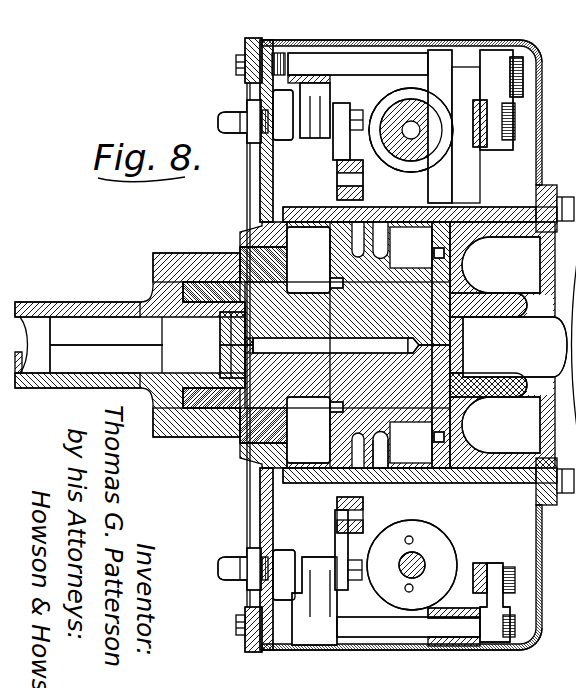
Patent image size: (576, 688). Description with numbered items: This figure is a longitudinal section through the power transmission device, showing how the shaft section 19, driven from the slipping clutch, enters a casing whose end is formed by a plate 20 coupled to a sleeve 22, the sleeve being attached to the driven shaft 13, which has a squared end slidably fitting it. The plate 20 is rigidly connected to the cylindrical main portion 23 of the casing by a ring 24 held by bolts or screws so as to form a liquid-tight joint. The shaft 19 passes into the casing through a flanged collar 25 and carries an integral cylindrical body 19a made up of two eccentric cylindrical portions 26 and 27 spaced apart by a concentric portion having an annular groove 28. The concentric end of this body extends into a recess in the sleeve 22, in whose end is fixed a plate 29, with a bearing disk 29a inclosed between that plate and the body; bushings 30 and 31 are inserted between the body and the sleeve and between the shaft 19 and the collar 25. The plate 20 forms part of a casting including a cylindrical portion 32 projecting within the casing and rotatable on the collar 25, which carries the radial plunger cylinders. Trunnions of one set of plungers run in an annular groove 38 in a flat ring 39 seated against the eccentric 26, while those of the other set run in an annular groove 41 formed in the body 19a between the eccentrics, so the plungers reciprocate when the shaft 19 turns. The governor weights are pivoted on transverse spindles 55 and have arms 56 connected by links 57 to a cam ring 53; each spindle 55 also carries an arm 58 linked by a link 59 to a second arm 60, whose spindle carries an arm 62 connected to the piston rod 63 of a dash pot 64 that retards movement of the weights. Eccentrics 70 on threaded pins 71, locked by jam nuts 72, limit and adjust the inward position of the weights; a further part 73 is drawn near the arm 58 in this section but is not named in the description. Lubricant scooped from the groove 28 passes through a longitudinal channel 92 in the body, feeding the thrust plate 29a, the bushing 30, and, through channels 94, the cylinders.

The driven shaft 13 is at (43, 358).
The shaft section 19 is at (515, 347).
The cylindrical body 19a is at (347, 345).
The plate 20 is at (267, 175).
The sleeve 22 is at (93, 302).
The cylindrical main portion 23 is at (336, 41).
The ring 24 is at (251, 40).
The flanged collar 25 is at (513, 230).
The cylindrical portion 26 is at (402, 274).
The cylindrical portion 27 is at (301, 295).
The annular groove 28 is at (375, 448).
The plate 29 is at (222, 355).
The bearing disk 29a is at (222, 331).
The bushing 30 is at (493, 310).
The bushing 31 is at (202, 292).
The cylindrical portion 32 is at (503, 210).
The annular groove 38 is at (444, 253).
The flat ring 39 is at (440, 234).
The annular groove 41 is at (332, 283).
The cam ring 53 is at (362, 170).
The transverse spindle 55 is at (386, 60).
The arm 56 is at (318, 125).
The link 57 is at (339, 148).
The arm 58 is at (502, 58).
The link 59 is at (482, 143).
The second arm 60 is at (533, 100).
The arm 62 is at (393, 86).
The piston rod 63 is at (430, 140).
The dash pot 64 is at (433, 170).
The eccentric 70 is at (284, 345).
The threaded pin 71 is at (226, 118).
The jam nut 72 is at (251, 125).
The arm 73 is at (462, 56).
The longitudinally extending channel 92 is at (330, 345).
The channel 94 is at (410, 357).